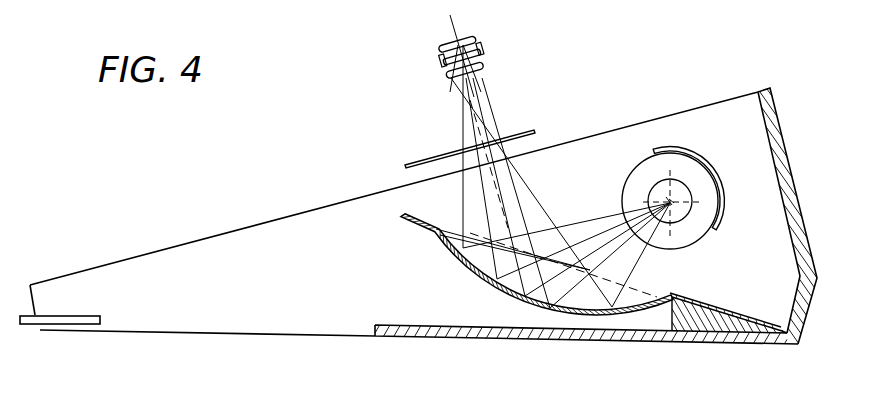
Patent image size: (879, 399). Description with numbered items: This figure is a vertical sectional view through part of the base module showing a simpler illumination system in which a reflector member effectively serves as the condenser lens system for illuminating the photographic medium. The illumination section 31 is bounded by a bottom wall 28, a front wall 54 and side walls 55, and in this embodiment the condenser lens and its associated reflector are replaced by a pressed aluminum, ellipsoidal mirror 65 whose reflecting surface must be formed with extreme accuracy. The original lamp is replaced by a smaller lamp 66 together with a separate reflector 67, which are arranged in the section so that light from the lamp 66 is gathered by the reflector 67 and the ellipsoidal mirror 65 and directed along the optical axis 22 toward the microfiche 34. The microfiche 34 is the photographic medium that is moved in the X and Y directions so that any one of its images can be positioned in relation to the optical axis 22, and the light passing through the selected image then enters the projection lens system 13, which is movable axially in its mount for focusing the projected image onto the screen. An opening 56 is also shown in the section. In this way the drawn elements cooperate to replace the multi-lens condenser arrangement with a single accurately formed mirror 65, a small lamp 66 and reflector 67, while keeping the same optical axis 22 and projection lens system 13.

The projection lens system 13 is at (484, 52).
The optical axis 22 is at (448, 27).
The bottom wall 28 is at (494, 344).
The illumination section 31 is at (345, 202).
The microfiche 34 is at (535, 131).
The front wall 54 is at (782, 158).
The side walls 55 is at (263, 291).
The exit window 56 is at (53, 316).
The ellipsoidal mirror 65 is at (462, 262).
The lamp 66 is at (688, 236).
The reflector 67 is at (672, 163).